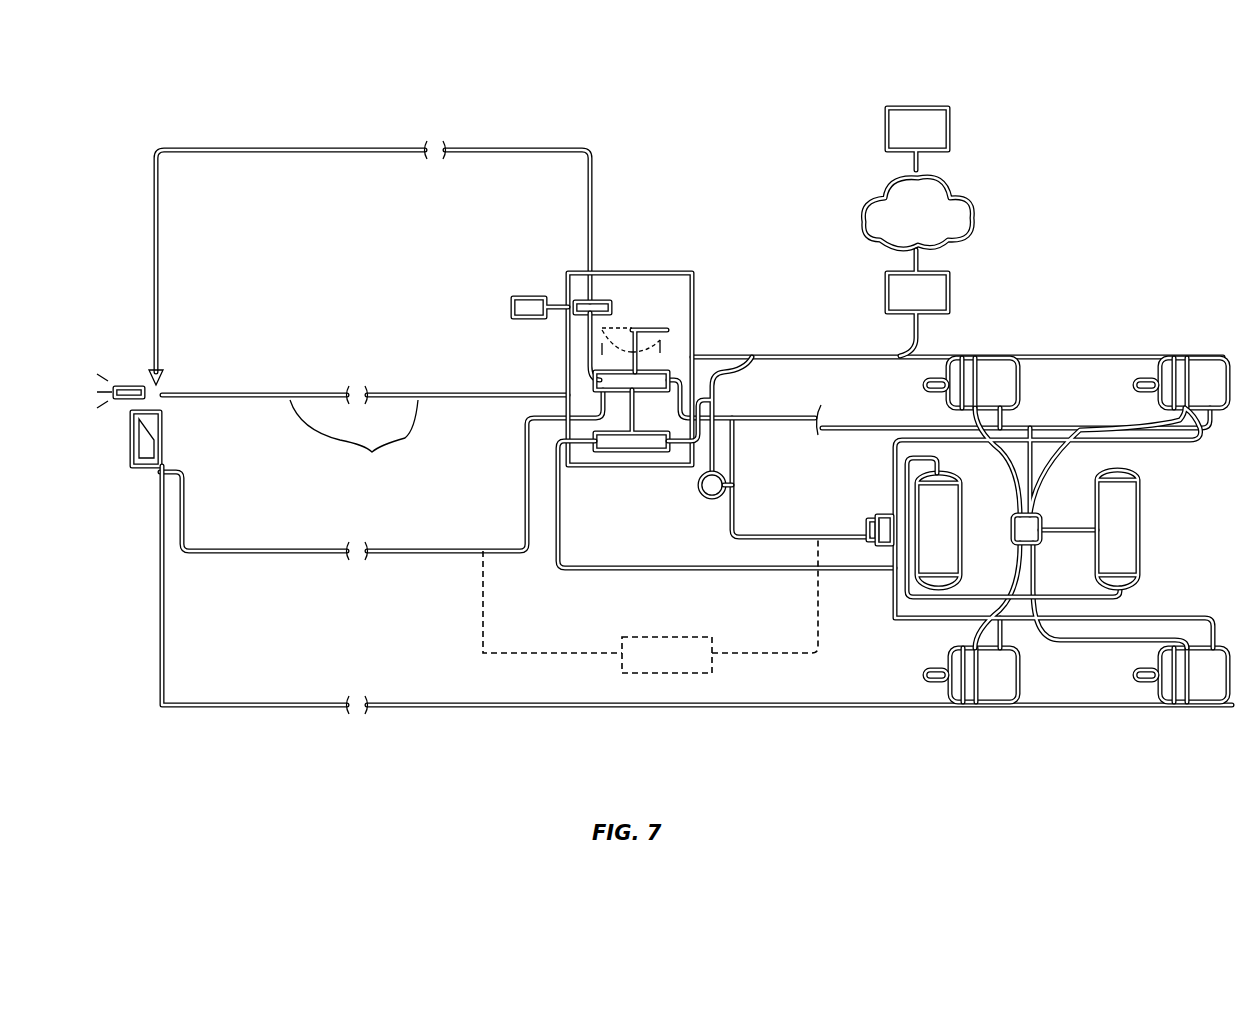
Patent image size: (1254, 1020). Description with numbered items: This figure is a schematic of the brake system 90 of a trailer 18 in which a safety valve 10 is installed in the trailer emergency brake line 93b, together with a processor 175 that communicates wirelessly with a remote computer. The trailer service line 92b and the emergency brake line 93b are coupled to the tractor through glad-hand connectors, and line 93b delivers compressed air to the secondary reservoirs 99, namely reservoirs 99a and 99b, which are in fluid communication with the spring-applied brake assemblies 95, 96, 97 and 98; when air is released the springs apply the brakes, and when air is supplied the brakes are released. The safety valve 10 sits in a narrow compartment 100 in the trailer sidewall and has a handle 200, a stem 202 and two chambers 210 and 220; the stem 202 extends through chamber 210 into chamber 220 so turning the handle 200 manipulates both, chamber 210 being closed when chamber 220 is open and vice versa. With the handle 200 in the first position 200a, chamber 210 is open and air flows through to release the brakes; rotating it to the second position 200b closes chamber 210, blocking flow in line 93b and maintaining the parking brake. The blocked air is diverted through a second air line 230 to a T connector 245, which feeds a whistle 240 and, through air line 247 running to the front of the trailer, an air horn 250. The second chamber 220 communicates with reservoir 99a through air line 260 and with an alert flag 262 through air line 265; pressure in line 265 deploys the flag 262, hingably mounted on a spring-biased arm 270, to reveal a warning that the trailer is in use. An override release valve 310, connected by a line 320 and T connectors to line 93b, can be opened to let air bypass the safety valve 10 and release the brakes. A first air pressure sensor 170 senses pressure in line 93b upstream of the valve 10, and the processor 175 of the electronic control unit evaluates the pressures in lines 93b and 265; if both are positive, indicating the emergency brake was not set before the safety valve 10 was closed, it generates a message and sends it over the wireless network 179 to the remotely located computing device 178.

The safety valve 10 is at (566, 257).
The trailer 18 is at (668, 637).
The trailer brake system 90 is at (697, 476).
The trailer service line 92b is at (878, 425).
The trailer emergency brake line 93b is at (218, 548).
The brake assembly 95 is at (1020, 675).
The brake assembly 96 is at (998, 372).
The brake assembly 97 is at (1205, 685).
The brake assembly 98 is at (1200, 372).
The distribution block 99 is at (1054, 528).
The secondary reservoir 99a is at (922, 497).
The secondary reservoir 99b is at (1142, 545).
The compartment 100 is at (693, 294).
The first air pressure sensor 170 is at (708, 498).
The processor 175 is at (917, 303).
The remotely located computing device 178 is at (917, 139).
The wireless network 179 is at (917, 213).
The handle 200 is at (640, 327).
The first position 200a is at (662, 345).
The second position 200b is at (628, 362).
The stem 202 is at (597, 370).
The chamber 210 is at (718, 372).
The second chamber 220 is at (640, 452).
The second air line 230 is at (583, 367).
The whistle 240 is at (527, 298).
The T connector 245 is at (600, 300).
The air line 247 is at (588, 225).
The air horn 250 is at (122, 386).
The air line 260 is at (625, 573).
The alert flag 262 is at (130, 440).
The air line 265 is at (766, 424).
The arm 270 is at (166, 392).
The override release valve 310 is at (667, 655).
The line 320 is at (483, 605).